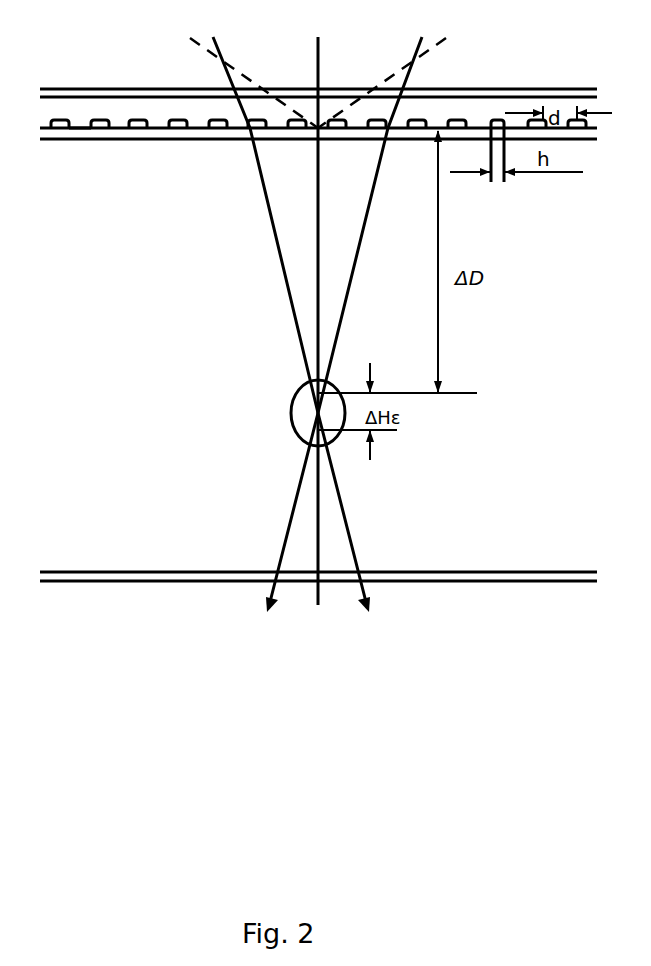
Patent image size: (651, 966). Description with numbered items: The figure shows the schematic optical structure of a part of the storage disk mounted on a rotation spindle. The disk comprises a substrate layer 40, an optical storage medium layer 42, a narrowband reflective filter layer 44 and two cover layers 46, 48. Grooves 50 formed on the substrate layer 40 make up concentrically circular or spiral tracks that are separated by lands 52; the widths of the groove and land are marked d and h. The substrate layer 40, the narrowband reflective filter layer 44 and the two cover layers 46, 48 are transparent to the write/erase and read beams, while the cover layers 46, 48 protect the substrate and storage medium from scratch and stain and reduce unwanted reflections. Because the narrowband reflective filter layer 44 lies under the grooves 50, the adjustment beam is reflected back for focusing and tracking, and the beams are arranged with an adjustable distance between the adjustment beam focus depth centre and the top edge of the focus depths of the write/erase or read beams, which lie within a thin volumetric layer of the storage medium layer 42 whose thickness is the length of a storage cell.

The substrate layer 40 is at (53, 111).
The optical storage medium layer 42 is at (212, 313).
The narrowband reflective filter layer 44 is at (127, 140).
The cover layer 46 is at (138, 88).
The cover layer 48 is at (142, 571).
The grooves 50 is at (83, 140).
The lands 52 is at (177, 140).